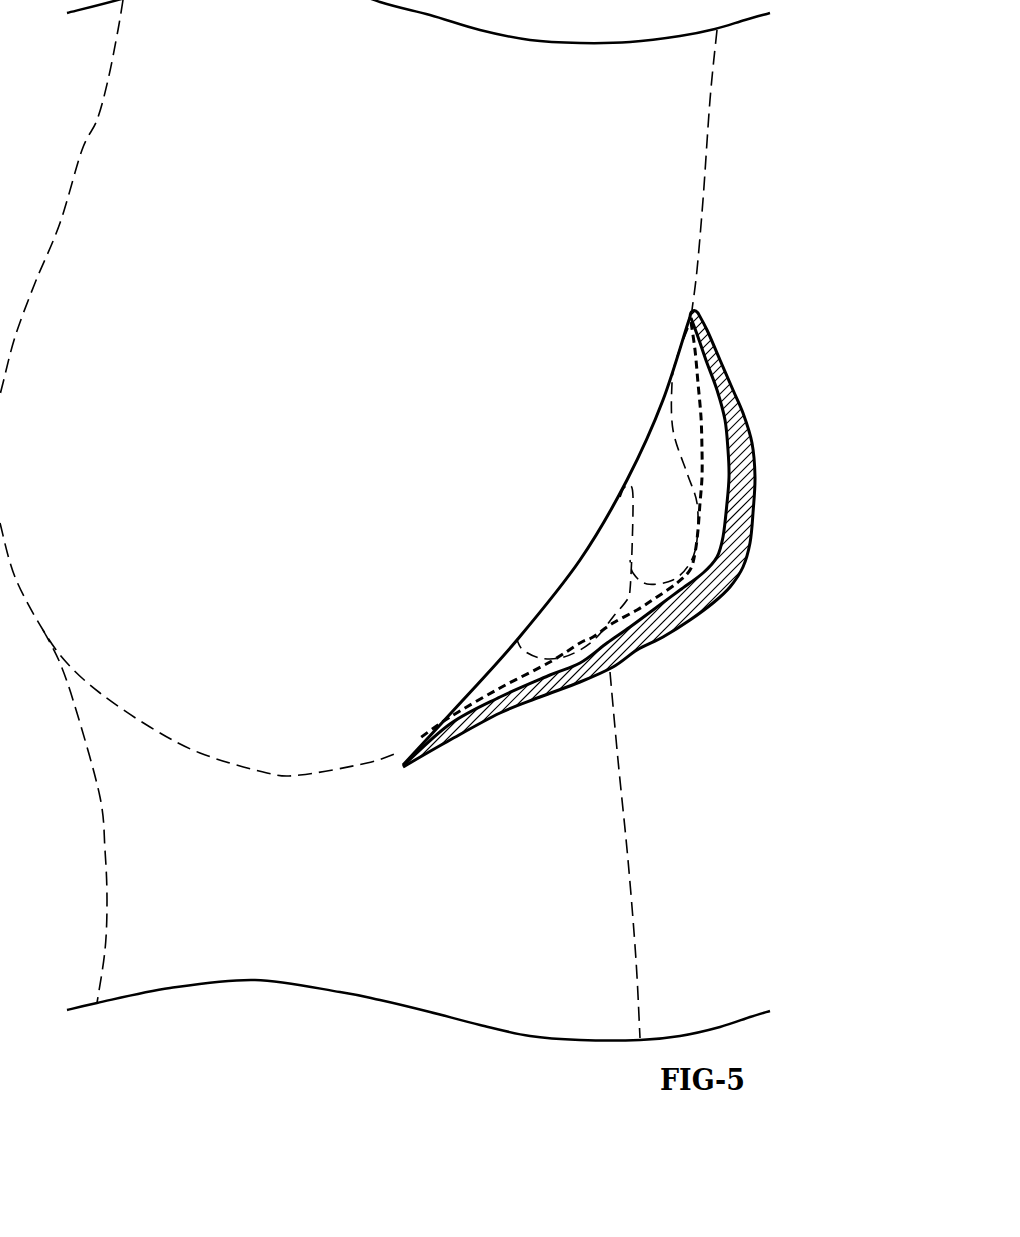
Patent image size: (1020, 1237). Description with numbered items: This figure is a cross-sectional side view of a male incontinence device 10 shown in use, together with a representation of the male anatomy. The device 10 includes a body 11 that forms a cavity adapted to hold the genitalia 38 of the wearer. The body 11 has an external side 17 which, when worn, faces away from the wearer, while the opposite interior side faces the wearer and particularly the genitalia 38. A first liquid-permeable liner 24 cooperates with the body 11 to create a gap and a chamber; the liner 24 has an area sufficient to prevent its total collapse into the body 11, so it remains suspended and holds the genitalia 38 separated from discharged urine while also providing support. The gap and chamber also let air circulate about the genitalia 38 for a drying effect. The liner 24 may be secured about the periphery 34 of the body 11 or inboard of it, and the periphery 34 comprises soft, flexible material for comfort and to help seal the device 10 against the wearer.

The male incontinence device 10 is at (633, 662).
The body 11 is at (740, 402).
The external side 17 is at (738, 352).
The first liquid-permeable liner 24 is at (702, 522).
The periphery 34 is at (663, 400).
The genitalia 38 is at (635, 598).